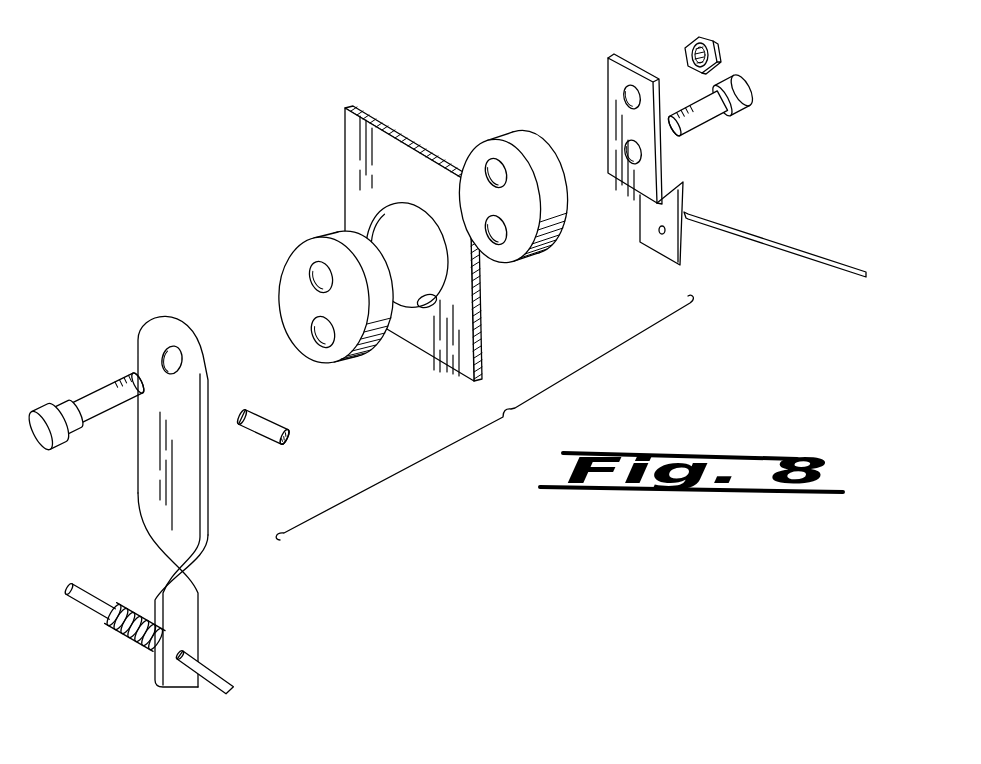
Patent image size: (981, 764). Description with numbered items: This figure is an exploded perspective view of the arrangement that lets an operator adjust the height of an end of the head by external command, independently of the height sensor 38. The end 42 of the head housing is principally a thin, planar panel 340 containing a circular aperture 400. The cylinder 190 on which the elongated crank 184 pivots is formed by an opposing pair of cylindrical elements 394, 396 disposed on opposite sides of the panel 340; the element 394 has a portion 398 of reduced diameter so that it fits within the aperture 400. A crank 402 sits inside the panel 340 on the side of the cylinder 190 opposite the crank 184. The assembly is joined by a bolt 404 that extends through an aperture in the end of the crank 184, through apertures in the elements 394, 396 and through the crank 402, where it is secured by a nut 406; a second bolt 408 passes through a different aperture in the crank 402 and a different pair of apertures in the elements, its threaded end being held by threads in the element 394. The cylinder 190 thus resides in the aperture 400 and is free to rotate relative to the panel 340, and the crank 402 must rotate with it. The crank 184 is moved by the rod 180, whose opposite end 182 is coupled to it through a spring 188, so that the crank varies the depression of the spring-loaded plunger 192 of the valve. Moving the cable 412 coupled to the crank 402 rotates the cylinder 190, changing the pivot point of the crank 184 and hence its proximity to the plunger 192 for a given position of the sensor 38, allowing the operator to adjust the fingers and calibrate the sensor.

The sensor 38 is at (652, 1).
The end 42 is at (480, 323).
The rod 180 is at (92, 593).
The opposite end 182 is at (218, 663).
The elongated crank 184 is at (187, 521).
The spring 188 is at (137, 637).
The cylinder 190 is at (370, 360).
The spring-loaded plunger 192 is at (265, 443).
The first thin, planar panel 340 is at (463, 352).
The cylindrical element 394 is at (304, 245).
The cylindrical element 396 is at (499, 139).
The portion of reduced diameter 398 is at (336, 231).
The circular aperture 400 is at (418, 306).
The crank 402 is at (667, 180).
The bolt 404 is at (100, 397).
The nut 406 is at (720, 53).
The second bolt 408 is at (713, 122).
The cable 412 is at (773, 239).